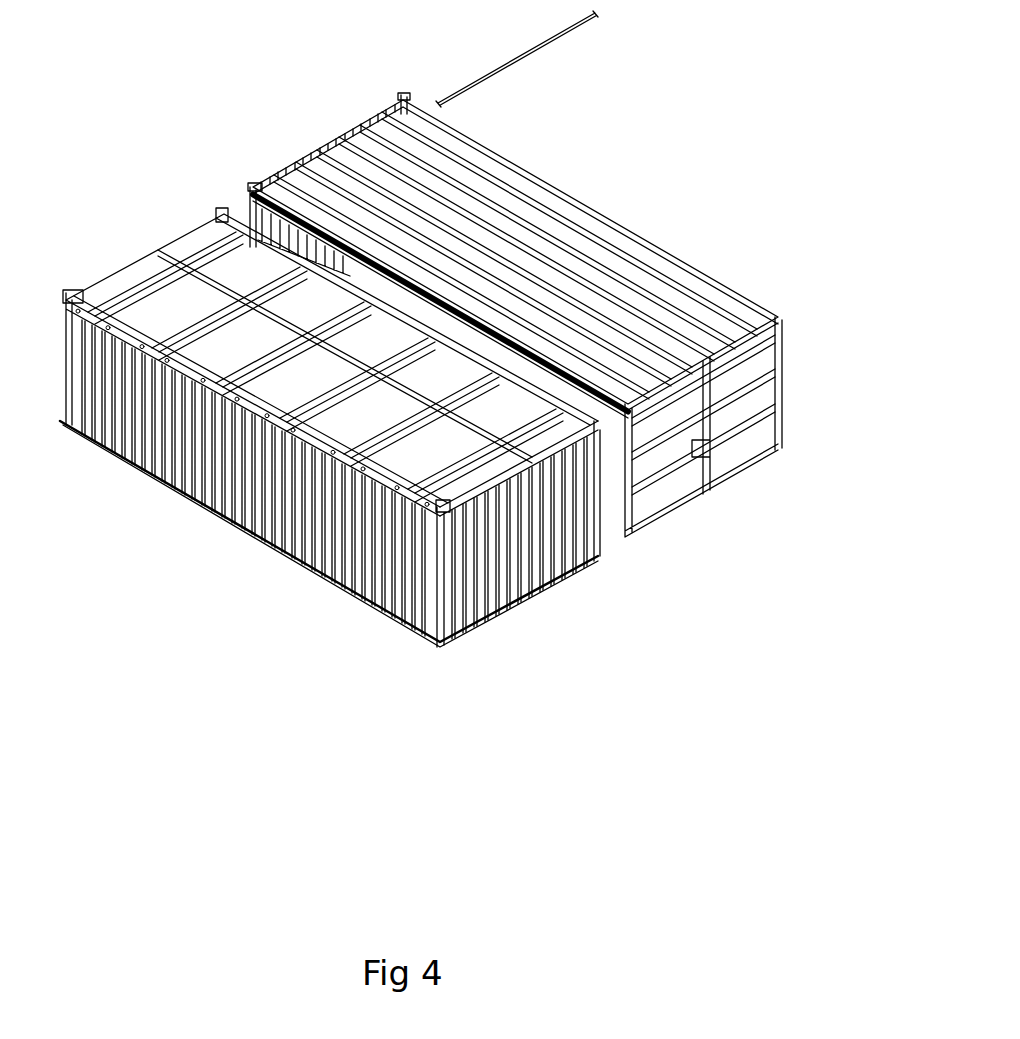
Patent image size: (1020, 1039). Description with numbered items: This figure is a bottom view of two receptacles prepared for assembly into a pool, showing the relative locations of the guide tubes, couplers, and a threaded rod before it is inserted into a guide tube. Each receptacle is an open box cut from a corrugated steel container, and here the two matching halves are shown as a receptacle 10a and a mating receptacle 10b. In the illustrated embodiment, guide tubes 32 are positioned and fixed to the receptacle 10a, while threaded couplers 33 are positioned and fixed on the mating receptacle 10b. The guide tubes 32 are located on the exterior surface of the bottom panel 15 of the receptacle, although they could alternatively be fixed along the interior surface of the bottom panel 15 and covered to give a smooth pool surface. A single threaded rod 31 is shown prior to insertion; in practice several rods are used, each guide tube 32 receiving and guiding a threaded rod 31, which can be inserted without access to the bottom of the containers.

The receptacle 10a is at (732, 447).
The mating receptacle 10b is at (336, 436).
The bottom panel 15 is at (217, 270).
The threaded rod 31 is at (587, 25).
The guide tubes 32 is at (568, 200).
The threaded couplers 33 is at (247, 233).